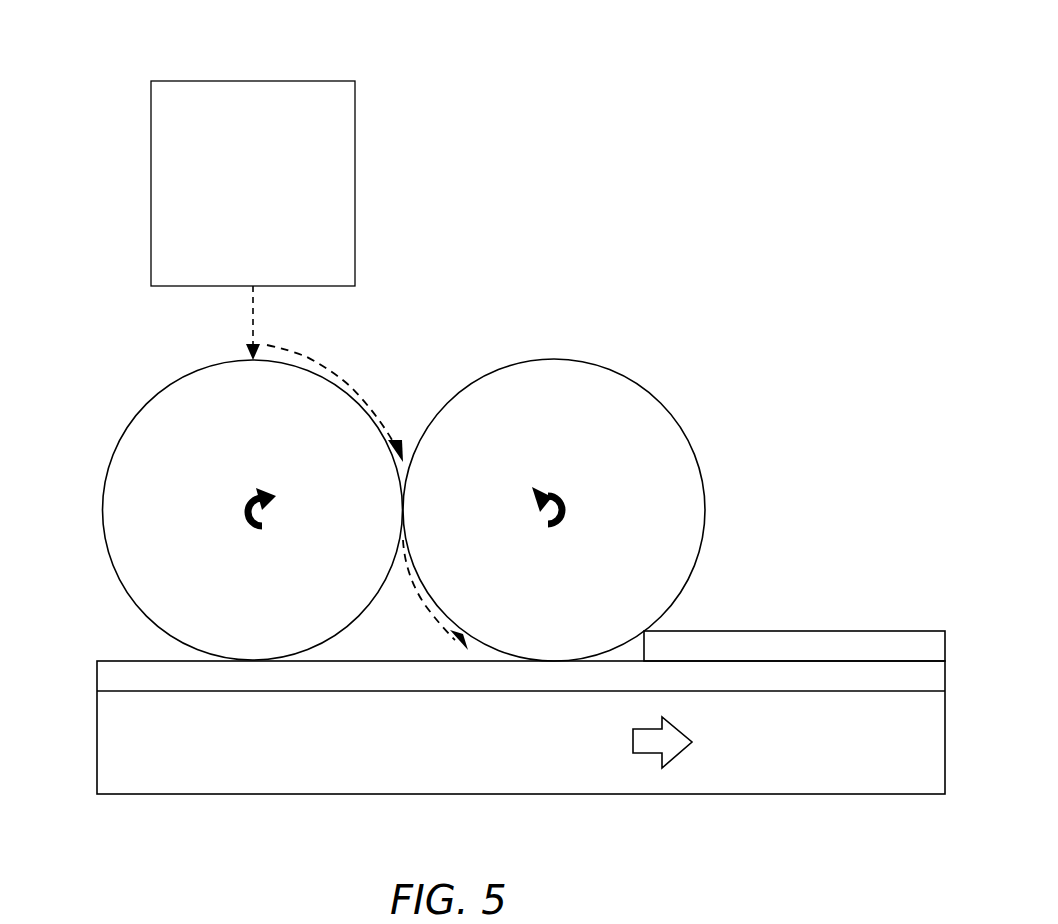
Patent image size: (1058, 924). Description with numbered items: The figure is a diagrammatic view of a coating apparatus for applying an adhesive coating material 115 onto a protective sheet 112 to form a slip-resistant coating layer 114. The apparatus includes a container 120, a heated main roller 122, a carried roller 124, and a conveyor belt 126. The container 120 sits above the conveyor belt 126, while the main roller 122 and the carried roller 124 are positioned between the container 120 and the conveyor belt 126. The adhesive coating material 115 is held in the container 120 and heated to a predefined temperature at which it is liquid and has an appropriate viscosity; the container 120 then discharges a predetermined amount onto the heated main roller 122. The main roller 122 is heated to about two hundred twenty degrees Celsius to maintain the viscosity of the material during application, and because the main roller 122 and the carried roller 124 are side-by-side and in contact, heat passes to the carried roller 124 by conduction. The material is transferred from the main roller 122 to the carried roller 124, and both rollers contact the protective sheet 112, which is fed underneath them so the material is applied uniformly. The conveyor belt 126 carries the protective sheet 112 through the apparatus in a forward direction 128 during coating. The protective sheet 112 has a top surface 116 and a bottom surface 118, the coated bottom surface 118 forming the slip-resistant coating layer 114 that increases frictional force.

The protective sheet 112 is at (118, 653).
The slip-resistant coating layer 114 is at (797, 631).
The adhesive coating material 115 is at (247, 323).
The top surface 116 is at (333, 691).
The bottom surface 118 is at (390, 661).
The container 120 is at (355, 82).
The main roller 122 is at (313, 372).
The carried roller 124 is at (614, 368).
The conveyor belt 126 is at (197, 794).
The forward direction 128 is at (648, 754).